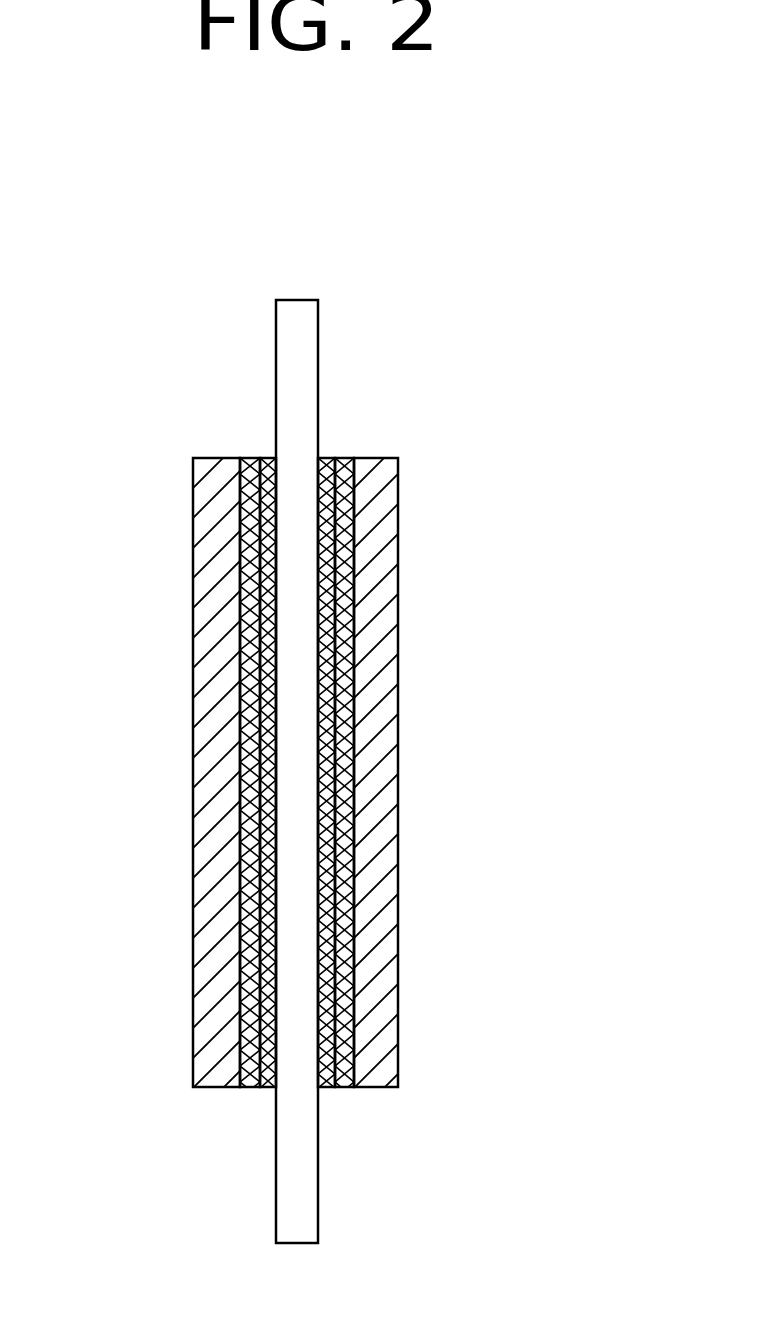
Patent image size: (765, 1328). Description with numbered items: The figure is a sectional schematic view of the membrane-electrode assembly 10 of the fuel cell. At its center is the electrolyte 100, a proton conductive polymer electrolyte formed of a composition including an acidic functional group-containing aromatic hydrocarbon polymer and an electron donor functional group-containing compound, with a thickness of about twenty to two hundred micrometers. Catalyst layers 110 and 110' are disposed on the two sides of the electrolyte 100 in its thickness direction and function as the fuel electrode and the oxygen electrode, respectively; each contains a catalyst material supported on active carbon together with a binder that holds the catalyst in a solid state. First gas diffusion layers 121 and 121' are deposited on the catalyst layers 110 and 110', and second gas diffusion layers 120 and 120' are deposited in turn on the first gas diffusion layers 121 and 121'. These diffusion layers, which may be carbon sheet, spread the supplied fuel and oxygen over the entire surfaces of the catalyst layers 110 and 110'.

The membrane-electrode assembly 10 is at (366, 298).
The electrolyte 100 is at (295, 308).
The catalyst layer 110 is at (227, 836).
The catalyst layer 110' is at (368, 836).
The second gas diffusion layer 120 is at (143, 779).
The second gas diffusion layer 120' is at (463, 781).
The first gas diffusion layer 121 is at (214, 711).
The first gas diffusion layer 121' is at (381, 711).